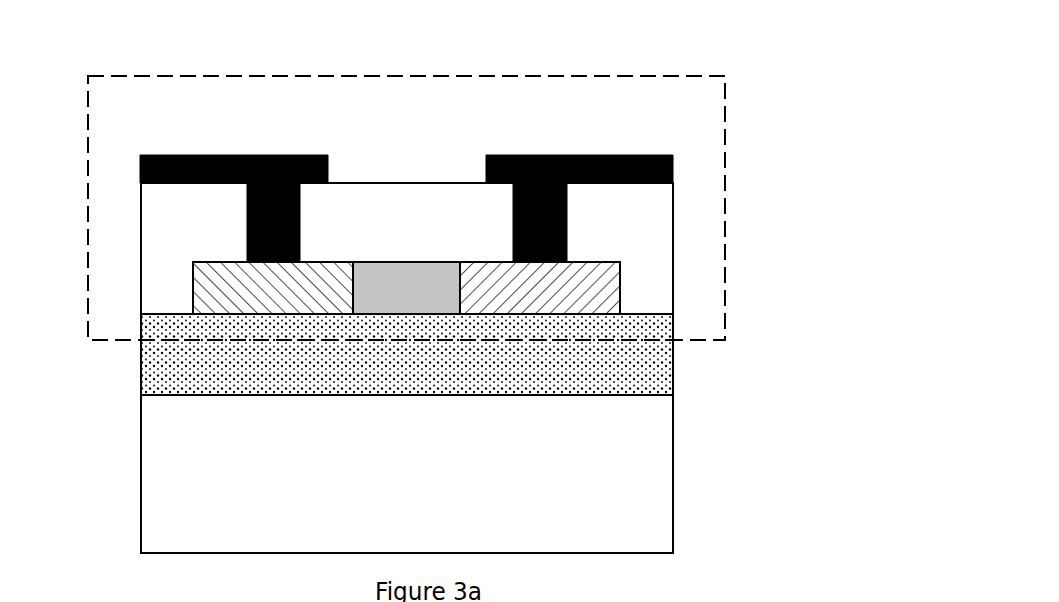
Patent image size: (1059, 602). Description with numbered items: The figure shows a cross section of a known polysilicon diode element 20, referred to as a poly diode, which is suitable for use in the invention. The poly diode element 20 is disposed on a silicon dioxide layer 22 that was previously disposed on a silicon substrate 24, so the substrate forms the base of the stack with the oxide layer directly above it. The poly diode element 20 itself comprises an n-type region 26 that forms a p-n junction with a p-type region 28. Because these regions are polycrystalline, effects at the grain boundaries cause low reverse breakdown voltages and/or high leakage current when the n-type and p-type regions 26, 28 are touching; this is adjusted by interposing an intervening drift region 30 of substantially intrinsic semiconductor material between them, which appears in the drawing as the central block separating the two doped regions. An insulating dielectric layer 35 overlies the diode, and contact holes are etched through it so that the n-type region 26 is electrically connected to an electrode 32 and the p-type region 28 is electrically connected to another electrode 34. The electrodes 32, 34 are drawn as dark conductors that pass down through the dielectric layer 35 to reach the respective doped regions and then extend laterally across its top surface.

The polysilicon diode element 20 is at (716, 76).
The silicon dioxide layer 22 is at (632, 362).
The silicon substrate 24 is at (630, 473).
The n-type region 26 is at (183, 288).
The p-type region 28 is at (630, 288).
The drift region 30 is at (433, 278).
The electrode 32 is at (128, 172).
The electrode 34 is at (676, 172).
The insulating dielectric layer 35 is at (168, 230).